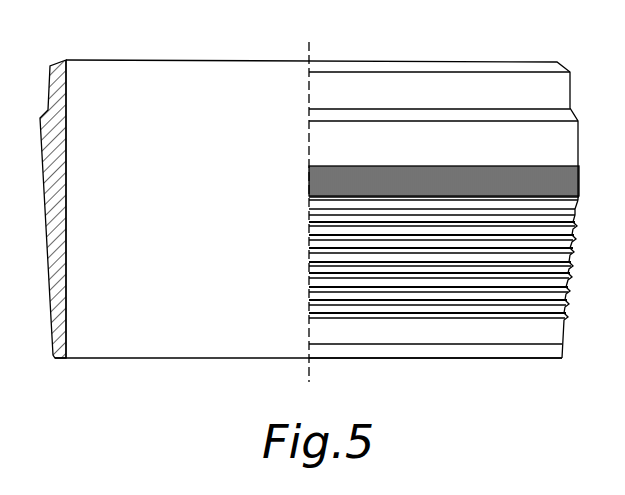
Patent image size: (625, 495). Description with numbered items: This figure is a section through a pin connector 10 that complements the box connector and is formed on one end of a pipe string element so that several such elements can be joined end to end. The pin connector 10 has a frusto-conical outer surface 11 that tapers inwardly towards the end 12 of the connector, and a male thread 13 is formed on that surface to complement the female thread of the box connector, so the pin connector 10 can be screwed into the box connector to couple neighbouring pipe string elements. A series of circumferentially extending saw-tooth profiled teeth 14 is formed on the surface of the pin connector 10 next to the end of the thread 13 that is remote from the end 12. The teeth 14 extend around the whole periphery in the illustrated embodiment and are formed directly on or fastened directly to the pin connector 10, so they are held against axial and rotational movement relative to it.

The pin connector 10 is at (129, 60).
The frusto-conical outer surface 11 is at (309, 257).
The end of the connector 12 is at (442, 360).
The male thread 13 is at (450, 204).
The saw-tooth profiled teeth 14 is at (348, 170).